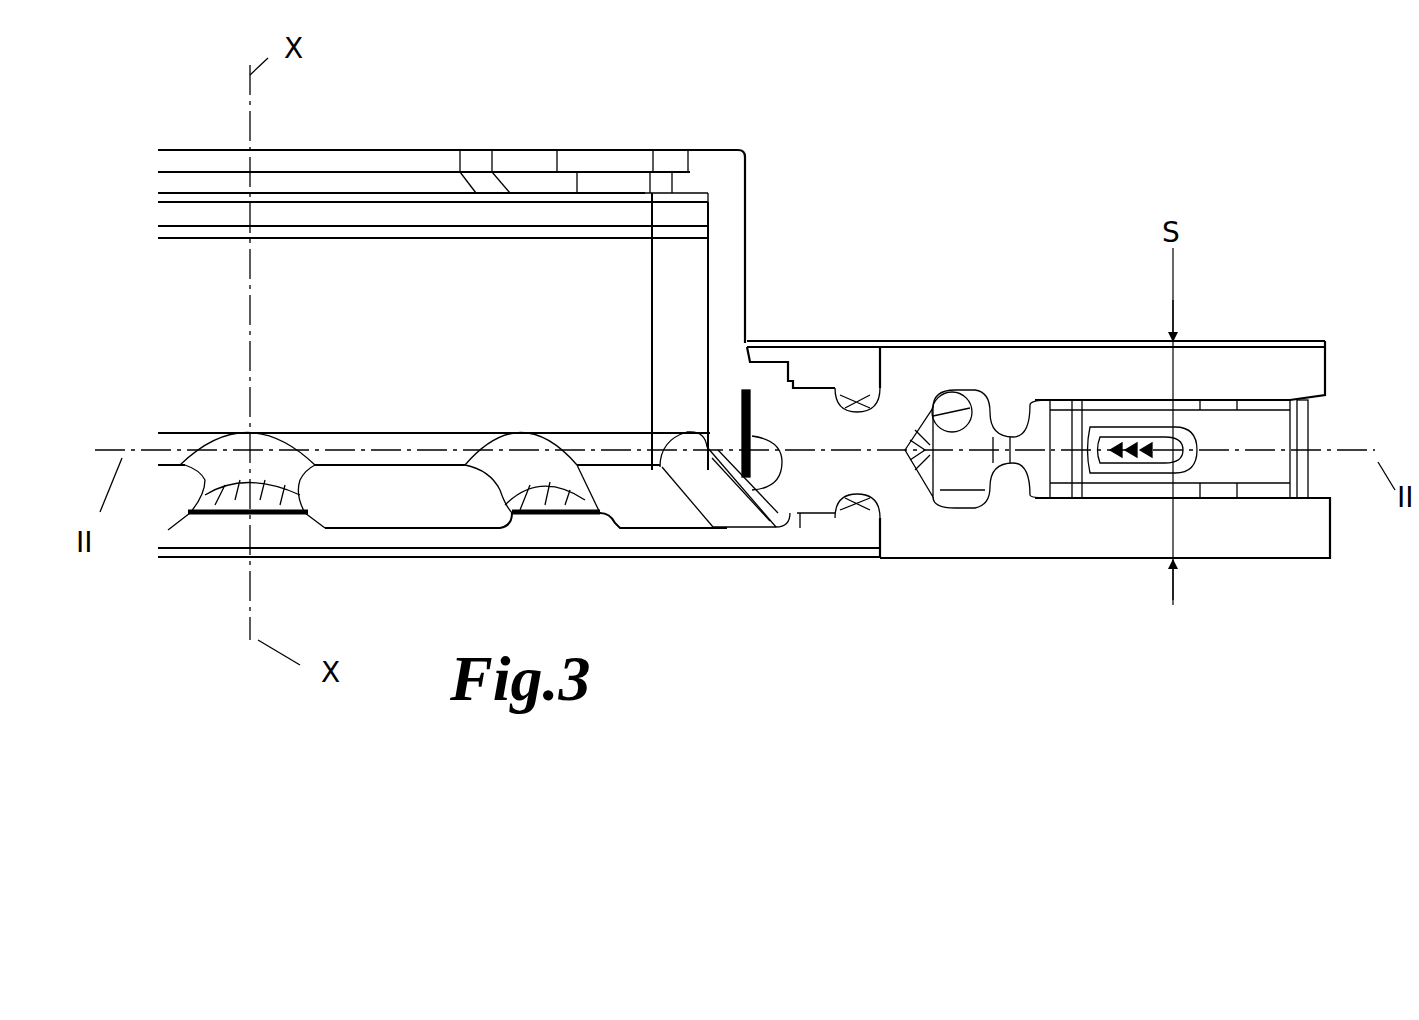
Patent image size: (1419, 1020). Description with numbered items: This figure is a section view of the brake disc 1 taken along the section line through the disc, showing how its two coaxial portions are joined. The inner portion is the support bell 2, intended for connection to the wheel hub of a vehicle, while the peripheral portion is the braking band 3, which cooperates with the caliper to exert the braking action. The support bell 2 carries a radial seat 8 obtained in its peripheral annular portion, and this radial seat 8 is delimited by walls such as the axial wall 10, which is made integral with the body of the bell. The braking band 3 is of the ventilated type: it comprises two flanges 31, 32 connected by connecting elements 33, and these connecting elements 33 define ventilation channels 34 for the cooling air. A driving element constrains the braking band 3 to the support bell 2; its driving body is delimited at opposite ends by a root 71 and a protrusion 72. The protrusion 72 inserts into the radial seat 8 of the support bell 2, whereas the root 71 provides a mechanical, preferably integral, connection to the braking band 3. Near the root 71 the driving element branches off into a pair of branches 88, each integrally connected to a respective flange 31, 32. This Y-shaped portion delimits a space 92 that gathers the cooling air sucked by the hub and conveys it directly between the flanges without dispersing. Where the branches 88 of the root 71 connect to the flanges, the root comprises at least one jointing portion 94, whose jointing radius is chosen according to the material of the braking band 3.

The brake disc 1 is at (1036, 112).
The support bell 2 is at (711, 146).
The braking band 3 is at (1118, 560).
The radial seat 8 is at (742, 525).
The axial wall 10 is at (758, 432).
The flange 31 is at (1295, 537).
The flange 32 is at (1215, 372).
The connecting element 33 is at (1240, 470).
The ventilation channel 34 is at (1325, 420).
The root 71 is at (885, 432).
The protrusion 72 is at (781, 418).
The branch 88 is at (922, 368).
The space 92 is at (962, 470).
The jointing portion 94 is at (980, 425).